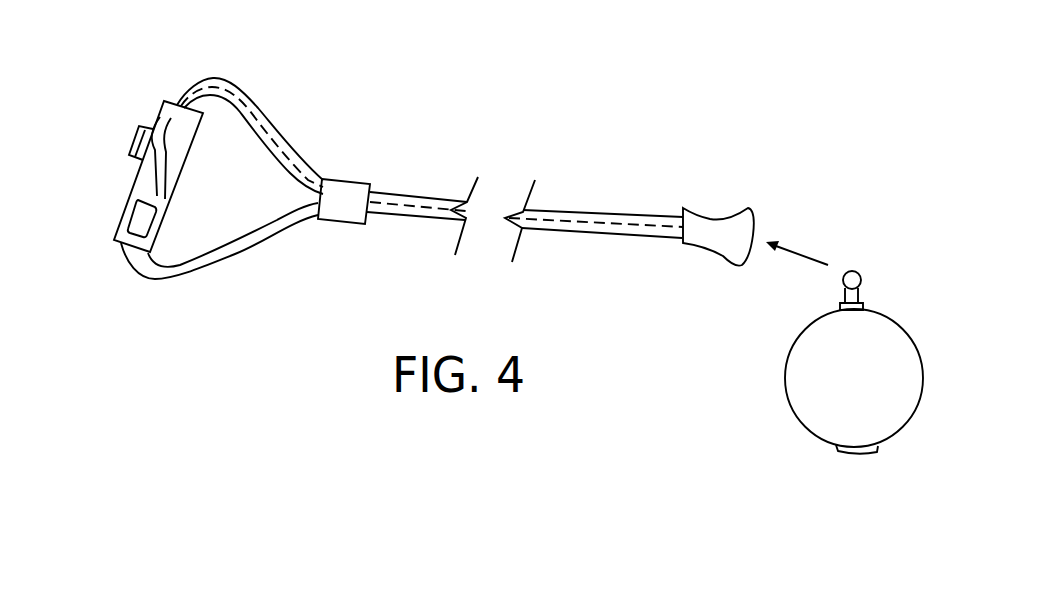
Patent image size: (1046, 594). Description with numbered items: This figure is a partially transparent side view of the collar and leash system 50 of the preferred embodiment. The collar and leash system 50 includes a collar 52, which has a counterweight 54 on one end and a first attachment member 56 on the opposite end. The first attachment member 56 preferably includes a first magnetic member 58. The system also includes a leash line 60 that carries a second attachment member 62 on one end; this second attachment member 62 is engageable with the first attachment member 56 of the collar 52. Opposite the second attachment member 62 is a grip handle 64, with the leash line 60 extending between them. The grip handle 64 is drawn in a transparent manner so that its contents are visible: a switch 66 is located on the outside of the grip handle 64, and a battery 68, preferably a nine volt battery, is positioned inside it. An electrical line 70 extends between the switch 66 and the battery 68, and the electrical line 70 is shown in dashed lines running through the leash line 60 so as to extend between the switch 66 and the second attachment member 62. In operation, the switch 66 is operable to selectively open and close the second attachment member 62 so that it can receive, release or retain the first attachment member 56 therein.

The collar and leash system 50 is at (547, 93).
The collar 52 is at (907, 333).
The counterweight 54 is at (868, 452).
The first attachment member 56 is at (872, 287).
The first magnetic member 58 is at (848, 273).
The leash line 60 is at (280, 123).
The second attachment member 62 is at (710, 213).
The grip handle 64 is at (177, 180).
The switch 66 is at (138, 139).
The battery 68 is at (136, 218).
The electrical line 70 is at (194, 89).